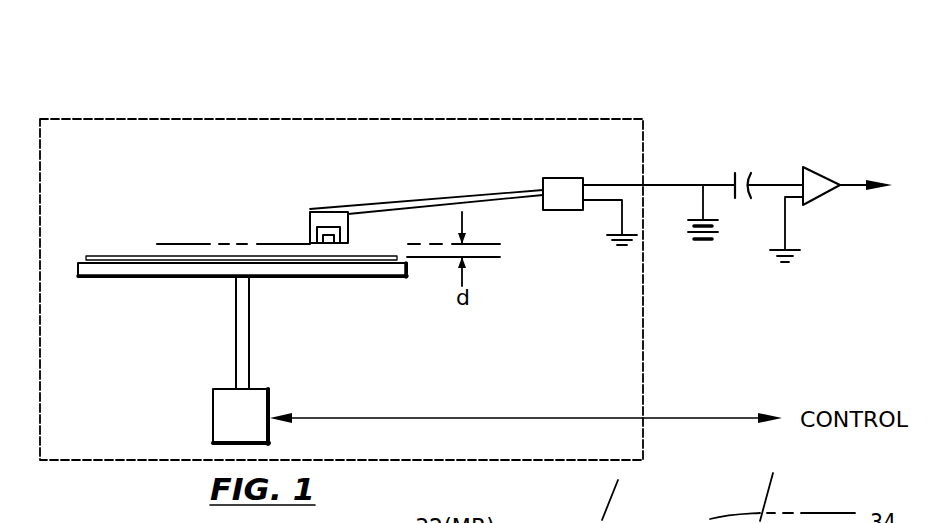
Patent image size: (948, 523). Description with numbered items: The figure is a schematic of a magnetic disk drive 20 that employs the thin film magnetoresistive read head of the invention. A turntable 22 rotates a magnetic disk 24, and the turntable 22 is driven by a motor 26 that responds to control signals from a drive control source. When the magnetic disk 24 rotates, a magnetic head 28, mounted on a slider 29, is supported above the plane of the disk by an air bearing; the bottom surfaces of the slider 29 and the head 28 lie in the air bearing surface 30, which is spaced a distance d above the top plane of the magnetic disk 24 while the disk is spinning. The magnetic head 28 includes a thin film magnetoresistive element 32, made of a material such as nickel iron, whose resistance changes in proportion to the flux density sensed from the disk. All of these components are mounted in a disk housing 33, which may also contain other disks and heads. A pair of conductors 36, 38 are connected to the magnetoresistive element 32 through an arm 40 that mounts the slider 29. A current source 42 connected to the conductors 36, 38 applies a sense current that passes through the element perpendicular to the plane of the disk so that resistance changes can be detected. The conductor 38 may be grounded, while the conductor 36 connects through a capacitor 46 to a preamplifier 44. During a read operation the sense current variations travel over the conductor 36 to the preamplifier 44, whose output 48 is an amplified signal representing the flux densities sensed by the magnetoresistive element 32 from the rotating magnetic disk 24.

The magnetic disk drive 20 is at (286, 62).
The disk housing 33 is at (331, 118).
The turntable 22 is at (130, 272).
The magnetic disk 24 is at (88, 258).
The air bearing surface 30 is at (221, 240).
The magnetic head 28 is at (310, 236).
The slider 29 is at (348, 233).
The thin film magnetoresistive element 32 is at (327, 244).
The arm 40 is at (402, 204).
The conductor 38 is at (621, 216).
The conductor 36 is at (655, 185).
The current source 42 is at (688, 228).
The capacitor 46 is at (747, 178).
The preamplifier 44 is at (822, 172).
The output of the preamplifier 48 is at (853, 182).
The motor 26 is at (213, 415).